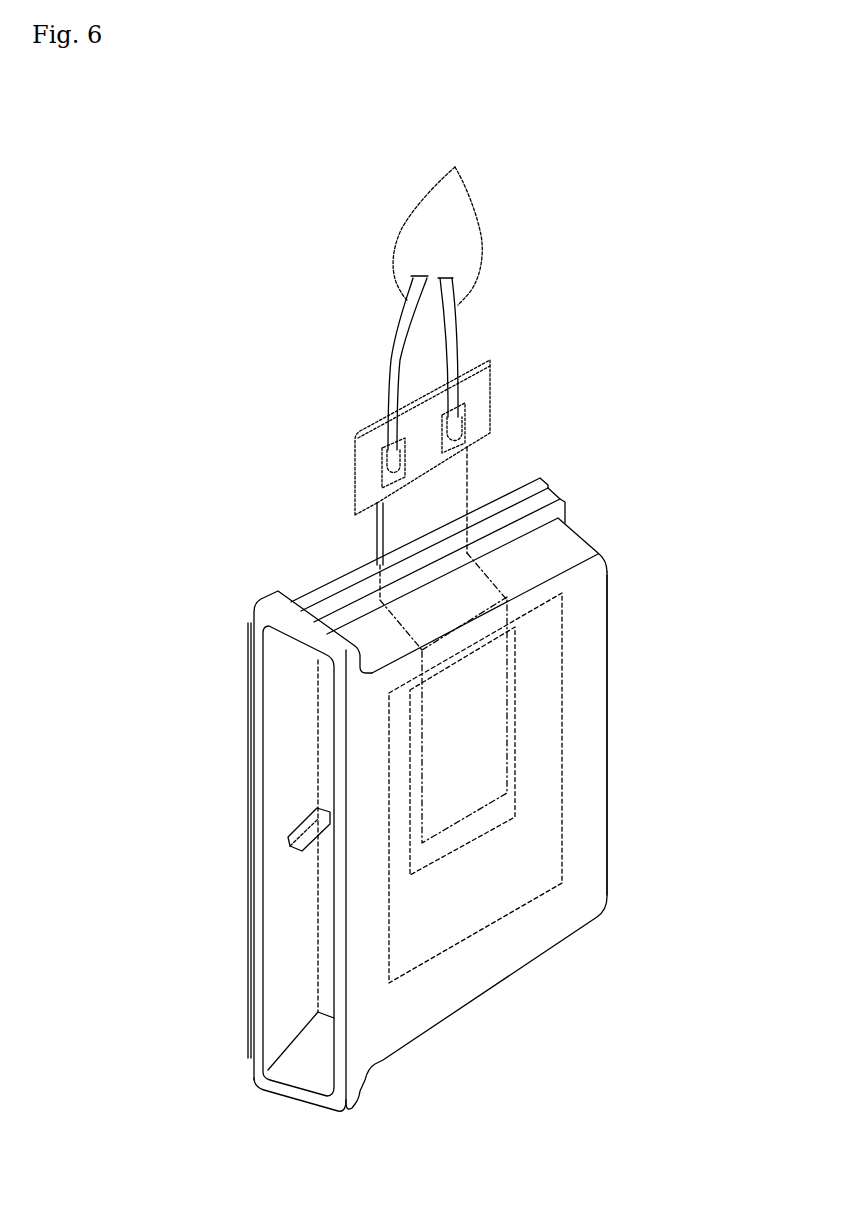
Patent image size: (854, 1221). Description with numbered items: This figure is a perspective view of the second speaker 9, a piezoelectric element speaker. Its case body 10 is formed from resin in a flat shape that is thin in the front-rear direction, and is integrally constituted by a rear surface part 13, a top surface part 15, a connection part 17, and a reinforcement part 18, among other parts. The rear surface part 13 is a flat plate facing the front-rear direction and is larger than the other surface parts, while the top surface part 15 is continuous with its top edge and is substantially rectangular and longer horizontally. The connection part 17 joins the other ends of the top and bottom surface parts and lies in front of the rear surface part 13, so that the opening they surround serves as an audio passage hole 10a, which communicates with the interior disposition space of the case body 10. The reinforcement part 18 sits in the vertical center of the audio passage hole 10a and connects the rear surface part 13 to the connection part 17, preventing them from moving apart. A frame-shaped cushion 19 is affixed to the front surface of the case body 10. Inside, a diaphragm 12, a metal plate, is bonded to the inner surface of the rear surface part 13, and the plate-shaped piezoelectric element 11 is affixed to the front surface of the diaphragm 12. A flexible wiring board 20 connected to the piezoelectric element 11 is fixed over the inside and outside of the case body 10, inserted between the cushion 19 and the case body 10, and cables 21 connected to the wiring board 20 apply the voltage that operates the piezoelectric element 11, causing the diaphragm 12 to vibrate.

The second speaker 9 is at (668, 271).
The case body 10 is at (722, 742).
The audio passage hole 10a is at (237, 865).
The piezoelectric element 11 is at (558, 645).
The diaphragm 12 is at (555, 788).
The rear surface part 13 is at (654, 735).
The top surface part 15 is at (504, 580).
The connection part 17 is at (239, 861).
The reinforcement part 18 is at (241, 847).
The cushion 19 is at (471, 544).
The wiring board 20 is at (478, 456).
The cables 21 is at (435, 296).